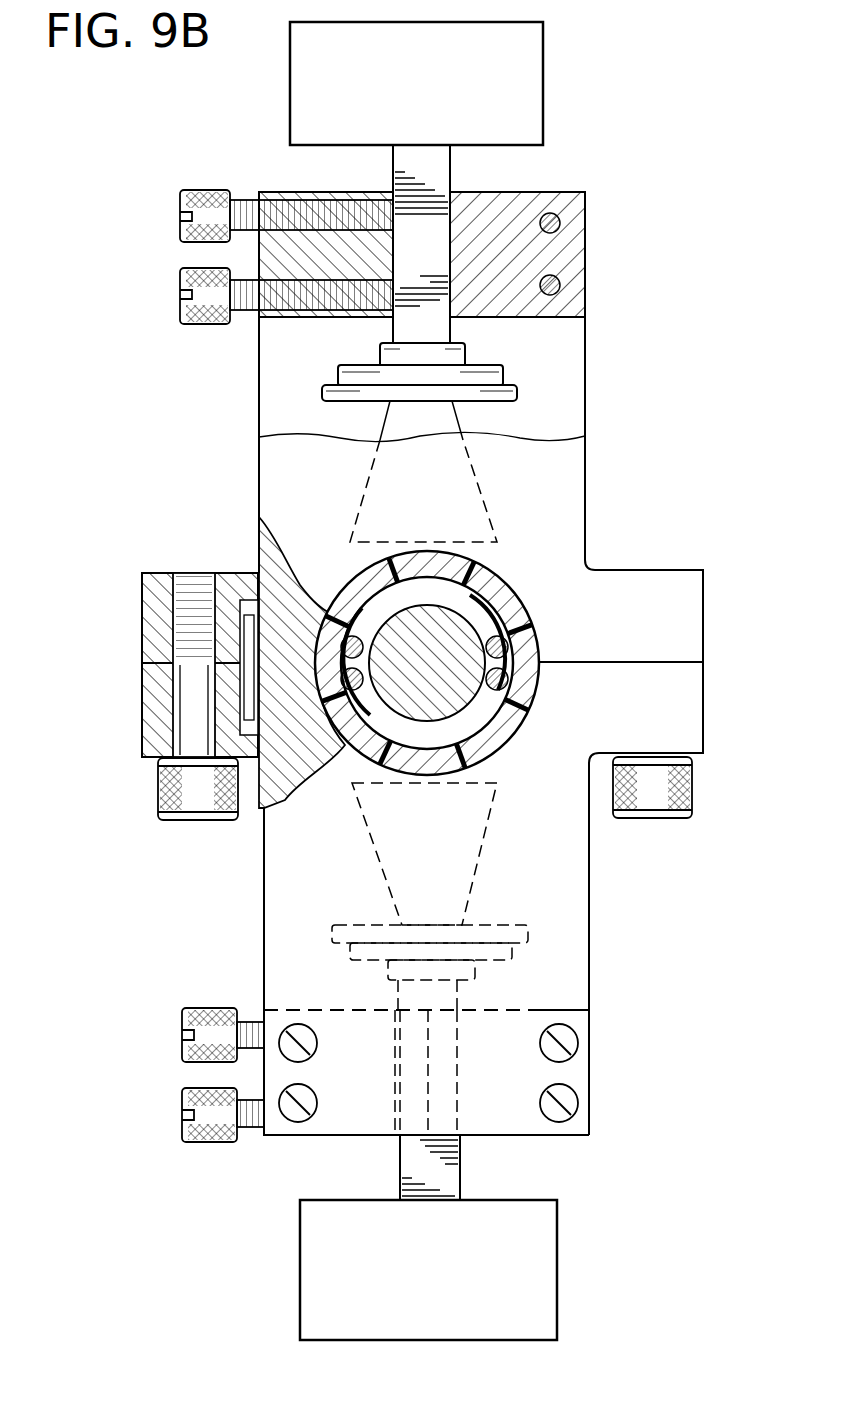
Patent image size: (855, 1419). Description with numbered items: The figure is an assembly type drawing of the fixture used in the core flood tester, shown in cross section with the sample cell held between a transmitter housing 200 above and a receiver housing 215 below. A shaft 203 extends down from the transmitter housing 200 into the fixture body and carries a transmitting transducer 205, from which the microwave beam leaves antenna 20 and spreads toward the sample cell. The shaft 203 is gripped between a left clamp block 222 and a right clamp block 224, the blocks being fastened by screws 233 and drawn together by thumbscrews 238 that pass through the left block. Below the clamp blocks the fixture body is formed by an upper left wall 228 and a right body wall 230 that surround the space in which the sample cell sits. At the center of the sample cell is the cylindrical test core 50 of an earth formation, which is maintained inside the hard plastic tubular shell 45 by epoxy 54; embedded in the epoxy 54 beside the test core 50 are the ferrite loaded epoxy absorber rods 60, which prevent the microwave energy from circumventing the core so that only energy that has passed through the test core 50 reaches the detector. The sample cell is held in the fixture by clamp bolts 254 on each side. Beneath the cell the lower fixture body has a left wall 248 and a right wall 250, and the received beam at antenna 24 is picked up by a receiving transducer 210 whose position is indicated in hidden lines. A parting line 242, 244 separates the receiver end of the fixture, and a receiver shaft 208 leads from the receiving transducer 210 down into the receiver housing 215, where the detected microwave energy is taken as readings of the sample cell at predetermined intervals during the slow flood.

The transmitter housing 200 is at (393, 129).
The transmitter shaft 203 is at (440, 165).
The left clamp block 222 is at (358, 190).
The right clamp block 224 is at (570, 242).
The screws 233 is at (558, 217).
The thumbscrews 238 is at (185, 268).
The upper housing wall 228 is at (275, 380).
The housing body 230 is at (570, 495).
The transmitting transducer 205 is at (498, 370).
The antenna 20 is at (478, 480).
The tubular shell 45 is at (527, 687).
The epoxy 54 is at (492, 707).
The test core 50 is at (455, 620).
The absorber rods 60 is at (490, 650).
The clamp bolts 254 is at (187, 788).
The lower housing left wall 248 is at (278, 890).
The lower housing right wall 250 is at (575, 903).
The antenna 24 is at (478, 865).
The receiving transducer 210 is at (468, 975).
The parting line 242 is at (322, 985).
The parting line 244 is at (572, 1010).
The receiver shaft 208 is at (458, 1168).
The receiver housing 215 is at (393, 1319).